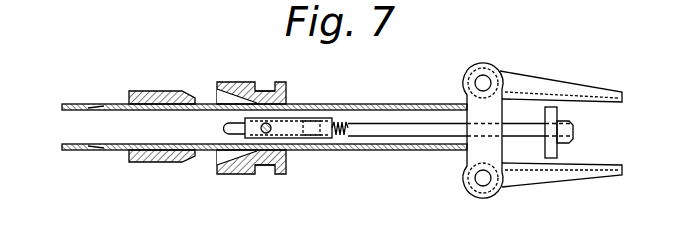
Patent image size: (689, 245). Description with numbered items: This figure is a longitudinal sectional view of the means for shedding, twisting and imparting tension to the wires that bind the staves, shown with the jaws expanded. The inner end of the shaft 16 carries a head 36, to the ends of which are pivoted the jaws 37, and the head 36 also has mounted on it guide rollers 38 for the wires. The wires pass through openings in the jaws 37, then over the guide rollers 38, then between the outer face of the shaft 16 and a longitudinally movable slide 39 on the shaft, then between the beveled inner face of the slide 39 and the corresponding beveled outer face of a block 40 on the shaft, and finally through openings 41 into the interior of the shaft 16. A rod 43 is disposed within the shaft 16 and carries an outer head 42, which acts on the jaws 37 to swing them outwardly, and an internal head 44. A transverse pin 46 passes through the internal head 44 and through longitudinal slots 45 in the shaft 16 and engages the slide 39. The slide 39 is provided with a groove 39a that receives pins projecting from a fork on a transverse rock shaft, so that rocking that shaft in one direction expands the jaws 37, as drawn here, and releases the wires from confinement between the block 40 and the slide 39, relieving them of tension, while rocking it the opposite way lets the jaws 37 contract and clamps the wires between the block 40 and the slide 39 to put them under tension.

The shaft 16 is at (62, 128).
The openings 41 is at (97, 104).
The block 40 is at (162, 91).
The slide 39 is at (241, 83).
The groove 39a is at (270, 86).
The internal head 44 is at (292, 140).
The longitudinal slots 45 is at (224, 128).
The transverse pin 46 is at (270, 125).
The rod 43 is at (384, 123).
The head 36 is at (483, 111).
The guide rollers 38 is at (483, 63).
The jaws 37 is at (546, 90).
The head 42 is at (556, 112).